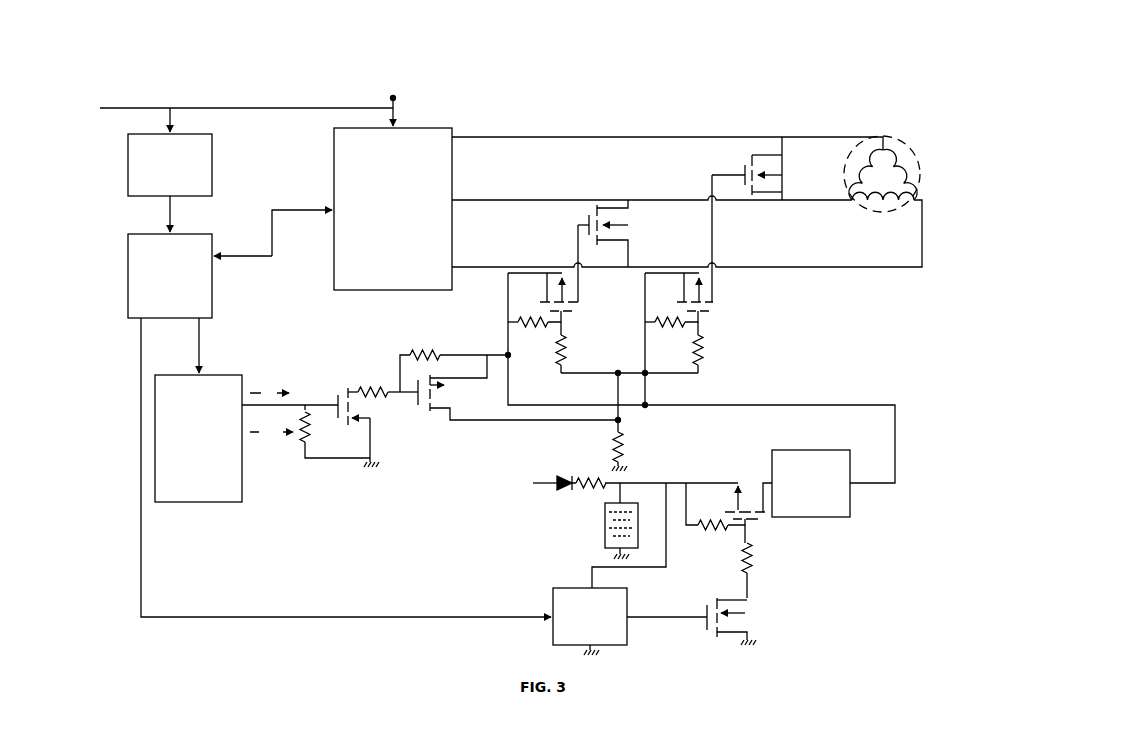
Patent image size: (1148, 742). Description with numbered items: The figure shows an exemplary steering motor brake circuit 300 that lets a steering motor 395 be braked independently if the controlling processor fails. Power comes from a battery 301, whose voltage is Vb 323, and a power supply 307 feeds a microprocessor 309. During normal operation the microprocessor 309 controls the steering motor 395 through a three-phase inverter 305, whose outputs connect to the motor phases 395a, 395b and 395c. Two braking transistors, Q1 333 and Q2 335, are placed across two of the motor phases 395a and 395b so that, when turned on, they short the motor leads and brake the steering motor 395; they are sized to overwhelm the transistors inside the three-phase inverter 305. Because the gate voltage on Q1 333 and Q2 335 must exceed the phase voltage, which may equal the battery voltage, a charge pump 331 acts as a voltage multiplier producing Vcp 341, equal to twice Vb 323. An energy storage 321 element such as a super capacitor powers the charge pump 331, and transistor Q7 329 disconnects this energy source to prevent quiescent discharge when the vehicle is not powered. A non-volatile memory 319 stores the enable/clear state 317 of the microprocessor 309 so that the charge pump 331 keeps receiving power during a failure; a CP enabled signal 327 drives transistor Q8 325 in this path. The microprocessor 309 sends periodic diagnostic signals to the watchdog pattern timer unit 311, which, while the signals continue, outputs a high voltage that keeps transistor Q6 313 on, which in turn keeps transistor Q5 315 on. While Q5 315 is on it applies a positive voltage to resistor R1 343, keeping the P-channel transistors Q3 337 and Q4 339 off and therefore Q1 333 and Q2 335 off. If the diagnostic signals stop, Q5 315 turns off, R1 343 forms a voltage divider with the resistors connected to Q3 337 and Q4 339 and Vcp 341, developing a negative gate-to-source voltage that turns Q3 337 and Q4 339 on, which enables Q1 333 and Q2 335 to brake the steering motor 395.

The electric power steering motor control system 300 is at (86, 66).
The battery 301 is at (246, 98).
The 3ø inverter 305 is at (393, 209).
The power supply 307 is at (170, 165).
The microprocessor 309 is at (170, 276).
The watchdog pattern timer unit 311 is at (224, 438).
The transistor Q6 313 is at (350, 405).
The transistor Q5 315 is at (509, 399).
The enable/clear state 317 is at (470, 606).
The non-volatile memory unit 319 is at (590, 621).
The energy storage 321 is at (590, 524).
The Vb 323 is at (635, 290).
The transistor Q8 325 is at (760, 617).
The charge pump enabled signal 327 is at (642, 613).
The transistor Q7 329 is at (788, 518).
The charge pump 331 is at (811, 483).
The transistor Q1 333 is at (761, 168).
The transistor Q2 335 is at (621, 233).
The transistor Q3 337 is at (696, 323).
The transistor Q4 339 is at (558, 323).
The Vcp 341 is at (846, 385).
The resistor R1 343 is at (633, 445).
The steering motor 395 is at (889, 165).
The motor phase 395a is at (861, 165).
The motor phase 395b is at (884, 209).
The motor winding 395c is at (917, 168).